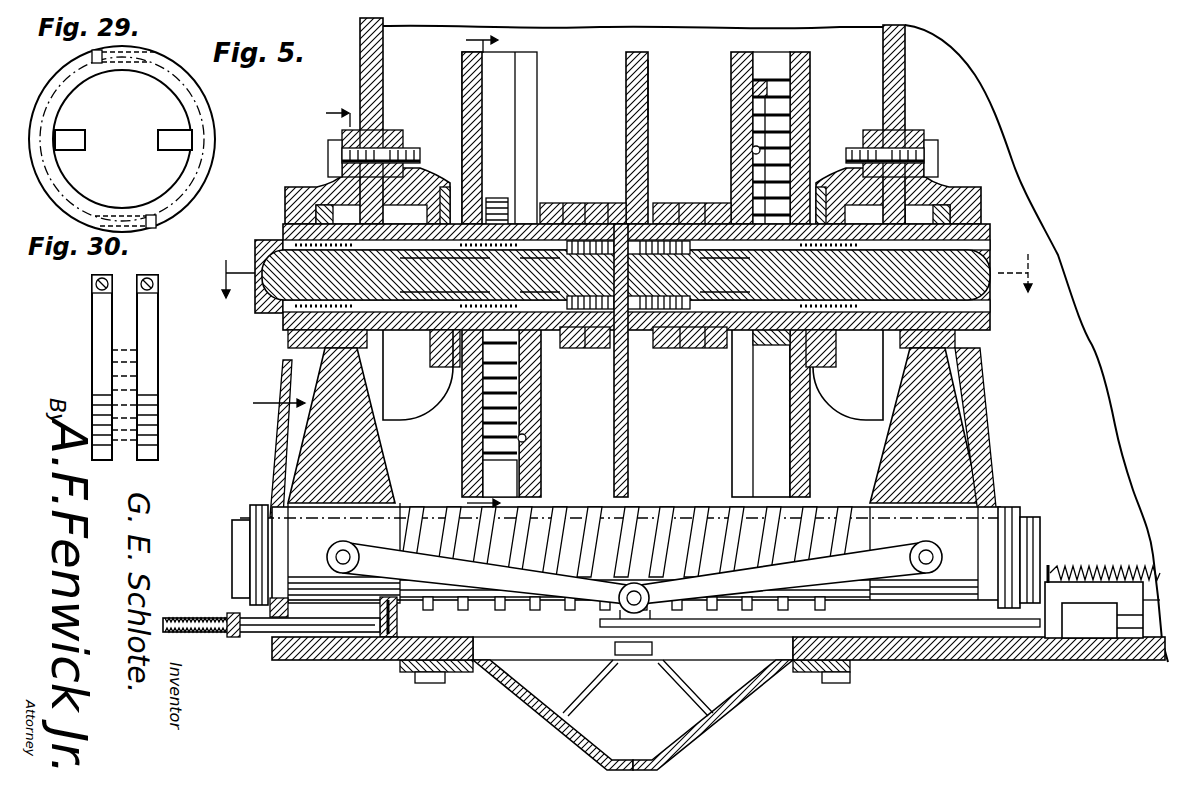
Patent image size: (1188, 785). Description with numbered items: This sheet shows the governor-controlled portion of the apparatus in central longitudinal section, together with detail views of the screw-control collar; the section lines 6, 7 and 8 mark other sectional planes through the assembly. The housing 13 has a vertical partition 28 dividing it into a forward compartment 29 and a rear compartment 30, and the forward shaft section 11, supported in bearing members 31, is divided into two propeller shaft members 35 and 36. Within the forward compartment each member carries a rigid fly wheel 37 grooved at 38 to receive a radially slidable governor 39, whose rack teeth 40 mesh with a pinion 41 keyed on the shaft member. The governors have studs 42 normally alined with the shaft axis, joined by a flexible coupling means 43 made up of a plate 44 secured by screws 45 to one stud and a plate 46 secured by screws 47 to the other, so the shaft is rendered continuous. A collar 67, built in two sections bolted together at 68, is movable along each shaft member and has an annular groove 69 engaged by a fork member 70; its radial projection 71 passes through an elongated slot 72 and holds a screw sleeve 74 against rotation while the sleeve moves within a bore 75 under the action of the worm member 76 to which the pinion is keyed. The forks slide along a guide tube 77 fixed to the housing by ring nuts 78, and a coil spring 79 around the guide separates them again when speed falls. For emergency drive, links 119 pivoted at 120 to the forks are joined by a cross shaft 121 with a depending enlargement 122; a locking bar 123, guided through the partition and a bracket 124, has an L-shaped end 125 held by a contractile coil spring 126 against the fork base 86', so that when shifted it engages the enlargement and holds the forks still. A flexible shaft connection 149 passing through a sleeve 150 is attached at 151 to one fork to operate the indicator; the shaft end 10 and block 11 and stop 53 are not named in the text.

In FIG. 5, the section line 6- 6 is at (473, 271).
In FIG. 5, the section line 7- 7 is at (625, 267).
In FIG. 5, the section line 8- 8 is at (289, 261).
In FIG. 5, the shaft end 10 is at (263, 290).
In FIG. 5, the forward shaft section 11 is at (456, 368).
In FIG. 5, the housing 13 is at (398, 30).
In FIG. 5, the vertical partition 28 is at (908, 108).
In FIG. 5, the forward compartment 29 is at (697, 42).
In FIG. 5, the rear compartment 30 is at (992, 114).
In FIG. 5, the bearing members 31 is at (340, 133).
In FIG. 5, the propeller shaft member 35 is at (437, 226).
In FIG. 5, the propeller shaft member 36 is at (821, 193).
In FIG. 5, the fly wheel 37 is at (808, 80).
In FIG. 5, the groove 38 is at (752, 151).
In FIG. 5, the governor 39 is at (750, 110).
In FIG. 5, the rack teeth 40 is at (790, 116).
In FIG. 5, the pinion 41 is at (490, 217).
In FIG. 5, the stud 42 is at (575, 349).
In FIG. 5, the coupling means 43 is at (624, 104).
In FIG. 5, the plate 44 is at (613, 458).
In FIG. 5, the screws 45 is at (592, 347).
In FIG. 5, the plate 46 is at (650, 103).
In FIG. 5, the screws 47 is at (667, 347).
In FIG. 5, the stop block 53 is at (596, 200).
In FIG. 29, the collar 67 is at (216, 137).
In FIG. 30, the collar 67 is at (158, 368).
In FIG. 5, the collar 67 is at (314, 207).
In FIG. 29, the bolts 68 is at (100, 48).
In FIG. 30, the bolts 68 is at (92, 287).
In FIG. 5, the annular groove 69 is at (316, 180).
In FIG. 5, the fork member 70 is at (317, 367).
In FIG. 29, the radial projection 71 is at (80, 130).
In FIG. 30, the radial projection 71 is at (112, 350).
In FIG. 5, the radial projection 71 is at (262, 290).
In FIG. 5, the elongated slot 72 is at (633, 375).
In FIG. 5, the screw sleeve 74 is at (298, 313).
In FIG. 5, the bore 75 is at (424, 338).
In FIG. 5, the worm member 76 is at (405, 232).
In FIG. 5, the guide tube 77 is at (1044, 521).
In FIG. 5, the ring nut 78 is at (260, 503).
In FIG. 5, the coil spring 79 is at (663, 507).
In FIG. 5, the base of fork 86' is at (1134, 652).
In FIG. 5, the link 119 is at (514, 588).
In FIG. 5, the pivot 120 is at (342, 552).
In FIG. 5, the cross shaft 121 is at (640, 623).
In FIG. 5, the depending enlargement 122 is at (618, 626).
In FIG. 5, the locking bar 123 is at (925, 633).
In FIG. 5, the bracket 124 is at (815, 621).
In FIG. 5, the L-shaped end 125 is at (1092, 600).
In FIG. 5, the contractile coil spring 126 is at (1107, 564).
In FIG. 5, the flexible shaft connection 149 is at (193, 616).
In FIG. 5, the sleeve 150 is at (248, 640).
In FIG. 5, the wire attachment 151 is at (355, 662).